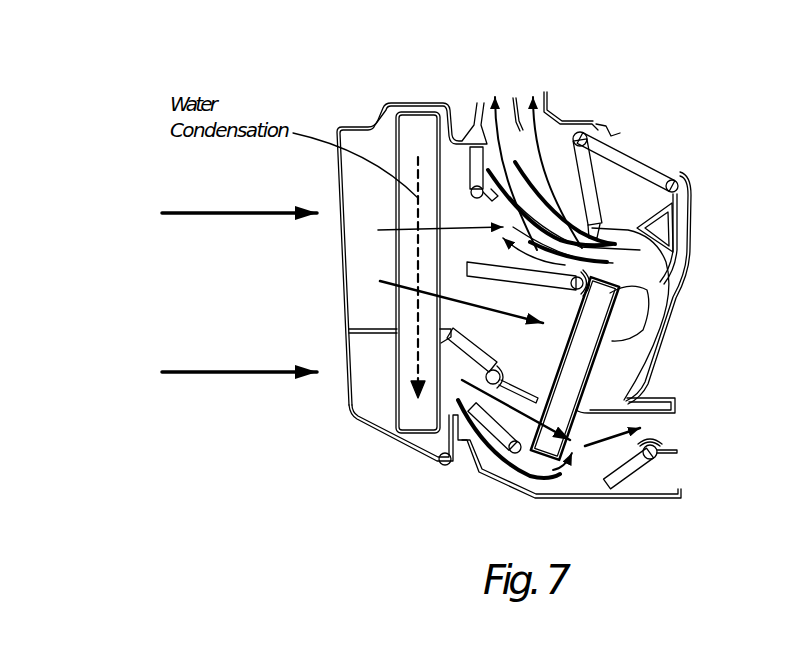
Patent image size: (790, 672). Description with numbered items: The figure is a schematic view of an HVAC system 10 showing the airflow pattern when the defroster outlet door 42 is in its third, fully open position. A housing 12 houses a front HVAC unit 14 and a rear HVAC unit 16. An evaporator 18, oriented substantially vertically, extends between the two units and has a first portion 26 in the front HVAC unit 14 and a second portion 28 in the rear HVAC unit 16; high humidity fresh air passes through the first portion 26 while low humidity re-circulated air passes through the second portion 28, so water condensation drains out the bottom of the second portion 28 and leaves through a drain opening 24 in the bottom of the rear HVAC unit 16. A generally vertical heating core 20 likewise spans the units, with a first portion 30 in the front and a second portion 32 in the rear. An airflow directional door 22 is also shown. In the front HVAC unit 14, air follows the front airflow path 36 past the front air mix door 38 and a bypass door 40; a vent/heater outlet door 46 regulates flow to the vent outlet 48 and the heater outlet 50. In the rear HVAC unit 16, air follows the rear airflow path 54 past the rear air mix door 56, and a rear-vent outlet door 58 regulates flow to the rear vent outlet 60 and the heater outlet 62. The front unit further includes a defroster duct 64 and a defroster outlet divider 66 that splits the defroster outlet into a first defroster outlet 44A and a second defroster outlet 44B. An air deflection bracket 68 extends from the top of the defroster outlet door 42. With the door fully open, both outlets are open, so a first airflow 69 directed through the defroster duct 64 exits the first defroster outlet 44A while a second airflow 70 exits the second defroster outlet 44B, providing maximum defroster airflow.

The HVAC system 10 is at (293, 77).
The housing 12 is at (345, 297).
The front HVAC unit 14 is at (363, 99).
The rear HVAC unit 16 is at (463, 485).
The evaporator 18 is at (380, 281).
The heating core 20 is at (612, 312).
The airflow directional door 22 is at (458, 355).
The drain opening 24 is at (438, 463).
The first portion 26 is at (394, 198).
The second portion 28 is at (393, 416).
The first portion 30 is at (590, 370).
The second portion 32 is at (560, 467).
The front airflow path 36 is at (489, 237).
The front air mix door 38 is at (615, 330).
The bypass door 40 is at (410, 112).
The defroster outlet door 42 is at (590, 158).
The first defroster outlet 44A is at (485, 96).
The second defroster outlet 44B is at (527, 96).
The vent/heater outlet door 46 is at (657, 163).
The vent outlet 48 is at (635, 136).
The heater outlet 50 is at (669, 213).
The rear airflow path 54 is at (466, 390).
The rear air mix door 56 is at (496, 437).
The rear-vent outlet door 58 is at (645, 468).
The rear vent outlet 60 is at (689, 470).
The heater outlet 62 is at (672, 417).
The defroster duct 64 is at (520, 227).
The defroster outlet divider 66 is at (513, 98).
The air deflection bracket 68 is at (570, 197).
The first airflow 69 is at (507, 123).
The second airflow 70 is at (507, 123).